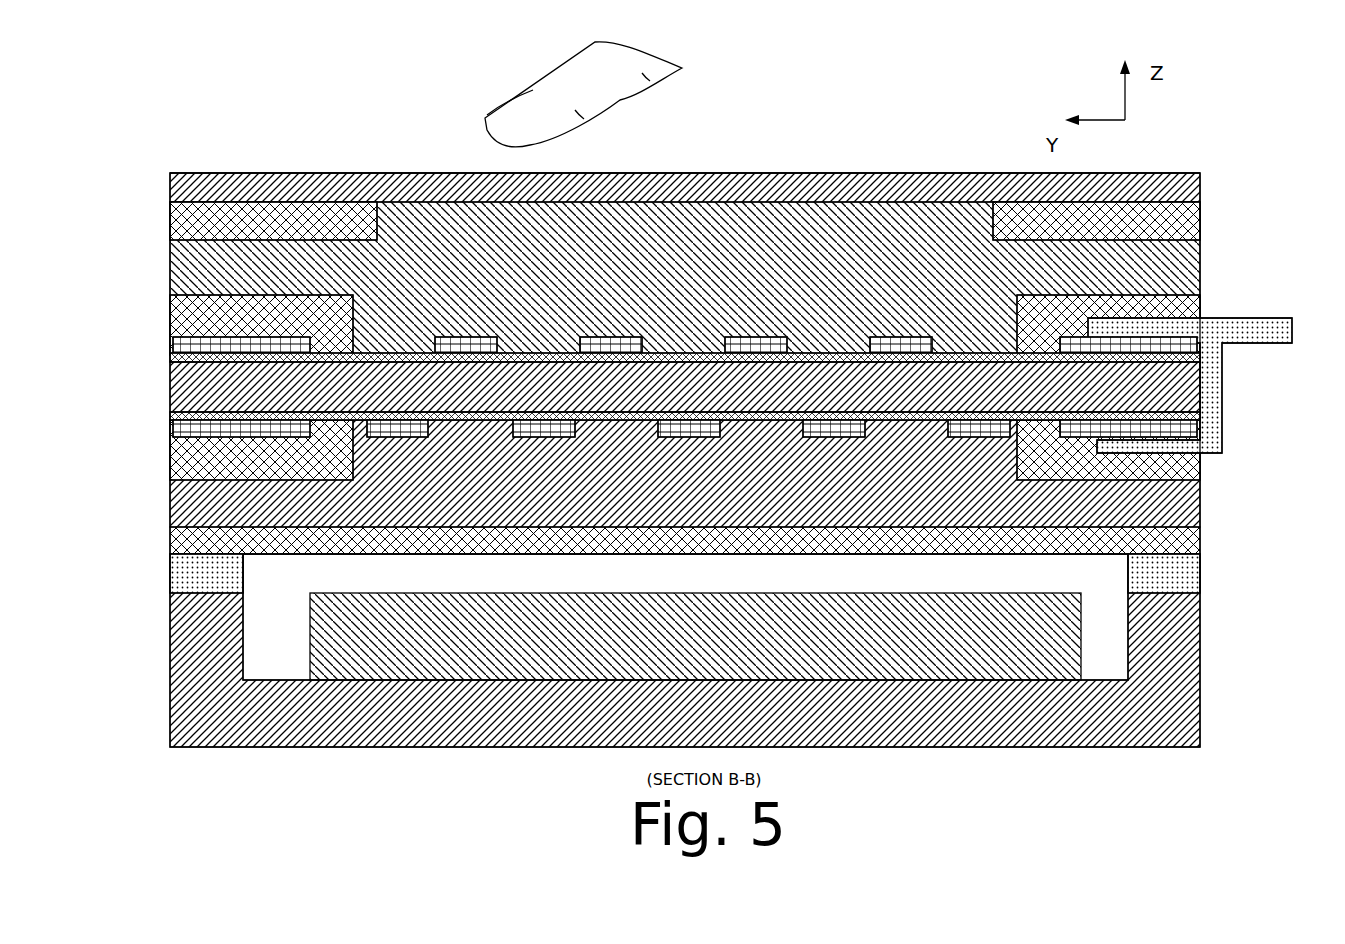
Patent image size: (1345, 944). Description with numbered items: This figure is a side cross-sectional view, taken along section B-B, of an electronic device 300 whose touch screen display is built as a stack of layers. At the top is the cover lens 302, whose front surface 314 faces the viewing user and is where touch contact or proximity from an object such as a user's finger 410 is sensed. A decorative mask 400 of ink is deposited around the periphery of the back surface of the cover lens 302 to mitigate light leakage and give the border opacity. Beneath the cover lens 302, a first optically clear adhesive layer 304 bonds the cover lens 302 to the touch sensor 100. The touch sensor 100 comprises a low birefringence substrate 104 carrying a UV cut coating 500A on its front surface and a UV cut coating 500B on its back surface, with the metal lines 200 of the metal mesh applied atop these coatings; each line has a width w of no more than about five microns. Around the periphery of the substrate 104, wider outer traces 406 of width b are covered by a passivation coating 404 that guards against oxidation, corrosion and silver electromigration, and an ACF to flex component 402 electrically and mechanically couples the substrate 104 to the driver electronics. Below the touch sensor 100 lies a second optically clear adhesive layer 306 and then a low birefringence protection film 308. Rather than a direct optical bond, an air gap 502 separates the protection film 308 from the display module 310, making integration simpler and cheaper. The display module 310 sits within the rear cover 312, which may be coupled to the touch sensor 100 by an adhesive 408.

The touch sensor 100 is at (695, 319).
The substrate 104 is at (667, 395).
The metal lines 200 is at (498, 313).
The electronic device 300 is at (704, 399).
The cover lens 302 is at (685, 126).
The first optically clear adhesive layer 304 is at (667, 277).
The second optically clear adhesive layer 306 is at (677, 497).
The protection film 308 is at (677, 551).
The display module 310 is at (677, 650).
The rear cover 312 is at (677, 722).
The front surface 314 is at (685, 112).
The decorative mask 400 is at (257, 230).
The ACF to flex component 402 is at (1224, 318).
The passivation coating 404 is at (302, 317).
The outer traces 406 is at (182, 358).
The adhesive 408 is at (189, 583).
The finger 410 is at (483, 118).
The UV cut coating 500A is at (650, 241).
The UV cut coating 500B is at (650, 442).
The air gap 502 is at (677, 583).